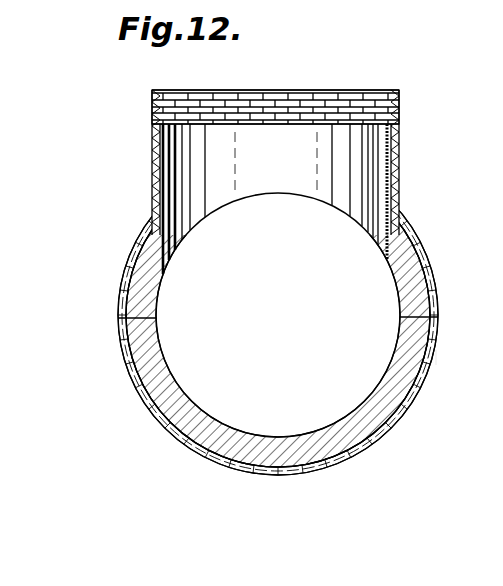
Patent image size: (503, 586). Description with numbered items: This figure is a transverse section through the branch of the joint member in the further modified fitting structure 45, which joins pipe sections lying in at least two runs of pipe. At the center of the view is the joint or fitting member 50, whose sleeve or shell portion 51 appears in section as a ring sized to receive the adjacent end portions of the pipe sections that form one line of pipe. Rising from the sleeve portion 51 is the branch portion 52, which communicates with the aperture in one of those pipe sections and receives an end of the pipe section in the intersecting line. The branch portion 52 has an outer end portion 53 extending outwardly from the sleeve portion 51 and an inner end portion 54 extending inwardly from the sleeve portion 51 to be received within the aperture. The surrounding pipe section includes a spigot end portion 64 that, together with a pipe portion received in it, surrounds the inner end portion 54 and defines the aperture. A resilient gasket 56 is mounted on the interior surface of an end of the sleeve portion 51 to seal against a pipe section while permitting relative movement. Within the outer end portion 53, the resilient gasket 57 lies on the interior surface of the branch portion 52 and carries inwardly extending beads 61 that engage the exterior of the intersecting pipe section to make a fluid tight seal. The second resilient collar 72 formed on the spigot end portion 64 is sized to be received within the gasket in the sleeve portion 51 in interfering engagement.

The fitting structure 45 is at (452, 100).
The joint or fitting member 50 is at (410, 224).
The sleeve or shell portion 51 is at (437, 297).
The branch portion 52 is at (396, 130).
The outer end portion 53 is at (153, 176).
The inner end portion 54 is at (176, 265).
The resilient gasket 56 is at (432, 360).
The resilient gasket 57 is at (268, 90).
The inwardly extending portions or beads 61 is at (225, 110).
The spigot end portion 64 is at (172, 378).
The second resilient collar 72 is at (420, 262).